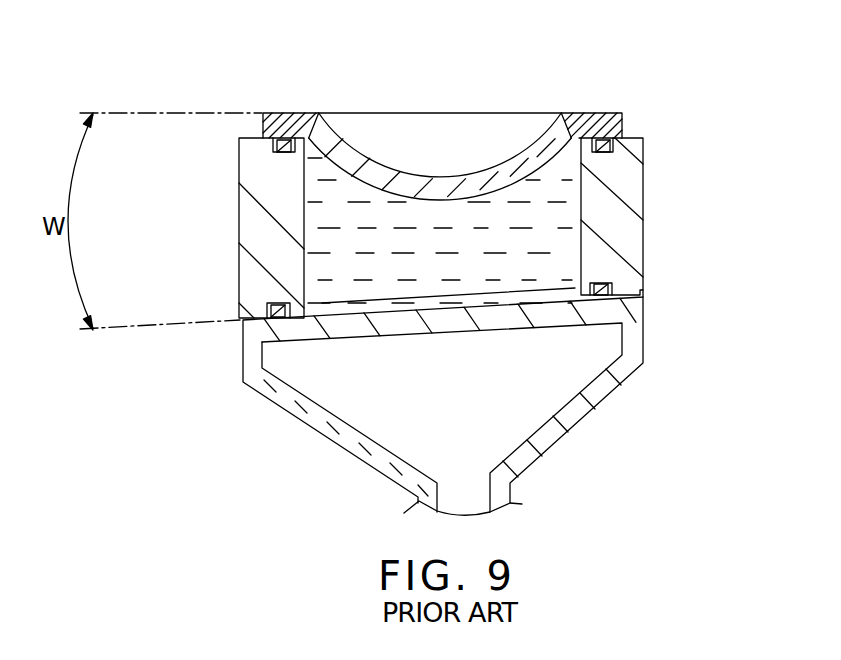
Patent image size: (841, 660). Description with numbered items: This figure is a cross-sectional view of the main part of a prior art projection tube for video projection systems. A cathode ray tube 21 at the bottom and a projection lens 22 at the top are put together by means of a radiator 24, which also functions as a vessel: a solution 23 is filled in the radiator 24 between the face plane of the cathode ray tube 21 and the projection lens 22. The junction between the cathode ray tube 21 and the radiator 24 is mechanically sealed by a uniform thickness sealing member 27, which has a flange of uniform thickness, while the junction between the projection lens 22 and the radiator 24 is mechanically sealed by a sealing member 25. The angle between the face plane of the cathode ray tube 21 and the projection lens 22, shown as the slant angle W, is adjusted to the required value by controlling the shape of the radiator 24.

The cathode ray tube 21 is at (607, 388).
The projection lens 22 is at (618, 117).
The solution 23 is at (345, 176).
The radiator 24 is at (646, 201).
The sealing member 25 is at (603, 143).
The uniform thickness sealing member 27 is at (600, 288).